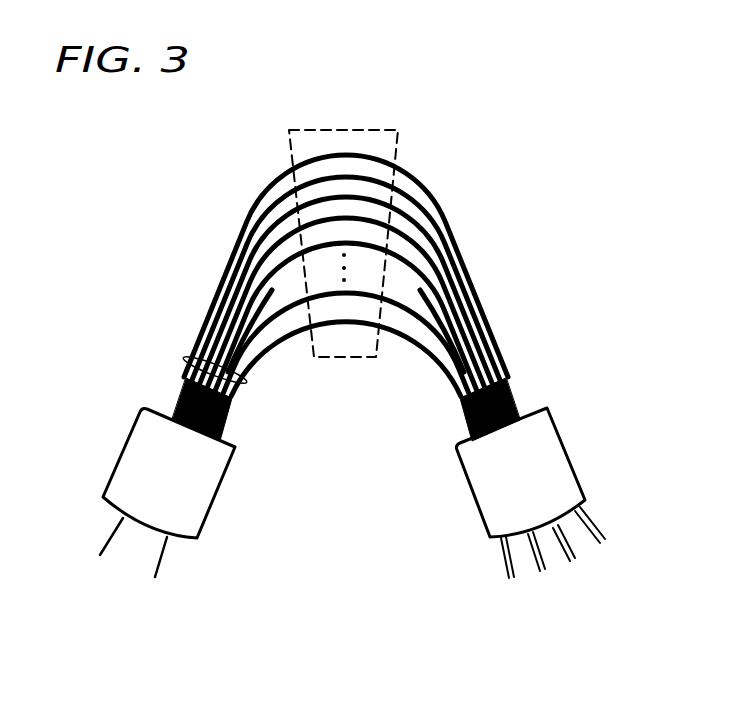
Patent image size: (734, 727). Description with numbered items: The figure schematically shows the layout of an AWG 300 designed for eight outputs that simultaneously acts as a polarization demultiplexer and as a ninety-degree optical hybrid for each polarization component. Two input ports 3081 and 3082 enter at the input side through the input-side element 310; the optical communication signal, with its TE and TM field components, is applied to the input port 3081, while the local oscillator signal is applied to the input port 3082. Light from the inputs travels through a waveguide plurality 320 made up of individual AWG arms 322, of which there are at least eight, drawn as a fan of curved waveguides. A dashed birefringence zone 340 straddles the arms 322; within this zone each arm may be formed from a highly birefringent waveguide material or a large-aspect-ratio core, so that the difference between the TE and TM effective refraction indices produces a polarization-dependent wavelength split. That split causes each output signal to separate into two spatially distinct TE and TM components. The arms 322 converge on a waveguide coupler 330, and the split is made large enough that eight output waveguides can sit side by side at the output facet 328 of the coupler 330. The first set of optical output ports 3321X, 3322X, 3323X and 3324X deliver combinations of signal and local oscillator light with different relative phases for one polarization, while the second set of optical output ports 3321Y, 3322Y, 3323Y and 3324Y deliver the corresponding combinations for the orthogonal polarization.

The AWG 300 is at (137, 118).
The input port 3081 is at (112, 540).
The input port 3082 is at (162, 557).
The first connector 310 is at (122, 450).
The waveguide plurality 320 is at (183, 358).
The AWG arms 322 is at (250, 228).
The output facet 328 is at (543, 522).
The waveguide coupler 330 is at (568, 447).
The optical output port 3321X is at (500, 552).
The optical output port 3321Y is at (510, 570).
The optical output port 3322X is at (537, 565).
The optical output port 3322Y is at (548, 560).
The optical output port 3323X is at (565, 553).
The optical output port 3323Y is at (573, 550).
The optical output port 3324X is at (598, 532).
The optical output port 3324Y is at (587, 513).
The birefringence zone 340 is at (358, 130).